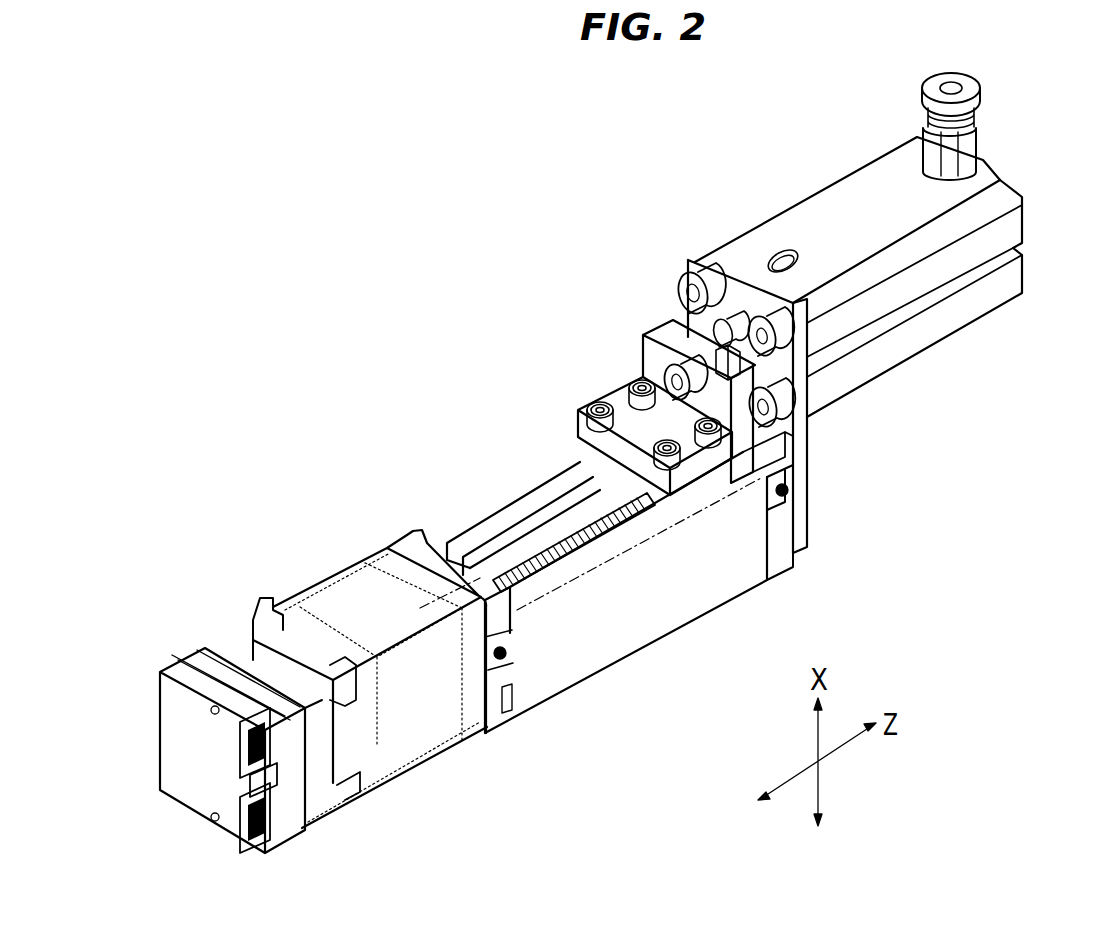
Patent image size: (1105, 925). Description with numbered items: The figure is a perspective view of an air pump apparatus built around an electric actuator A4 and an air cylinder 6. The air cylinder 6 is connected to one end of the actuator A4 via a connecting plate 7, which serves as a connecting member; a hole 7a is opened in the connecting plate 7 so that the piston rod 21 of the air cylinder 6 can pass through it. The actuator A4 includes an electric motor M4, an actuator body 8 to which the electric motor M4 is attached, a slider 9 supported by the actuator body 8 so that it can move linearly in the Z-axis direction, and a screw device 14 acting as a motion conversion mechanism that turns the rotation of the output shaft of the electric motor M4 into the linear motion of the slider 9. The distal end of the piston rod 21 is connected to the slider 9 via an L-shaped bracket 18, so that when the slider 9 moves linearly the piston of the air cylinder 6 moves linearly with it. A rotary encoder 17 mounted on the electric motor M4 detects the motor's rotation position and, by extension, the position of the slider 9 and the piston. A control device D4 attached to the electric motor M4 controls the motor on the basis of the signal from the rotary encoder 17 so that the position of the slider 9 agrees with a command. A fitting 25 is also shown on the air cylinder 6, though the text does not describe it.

The air cylinder 6 is at (834, 200).
The pipe fitting 25 is at (962, 145).
The connecting plate 7 is at (722, 284).
The hole 7a is at (737, 312).
The piston rod 21 is at (706, 330).
The L-shaped bracket 18 is at (627, 422).
The electric actuator A4 is at (530, 487).
The screw device 14 is at (594, 544).
The actuator body 8 is at (597, 649).
The slider 9 is at (704, 492).
The electric motor M4 is at (335, 598).
The rotary encoder 17 is at (238, 645).
The control device D4 is at (183, 754).